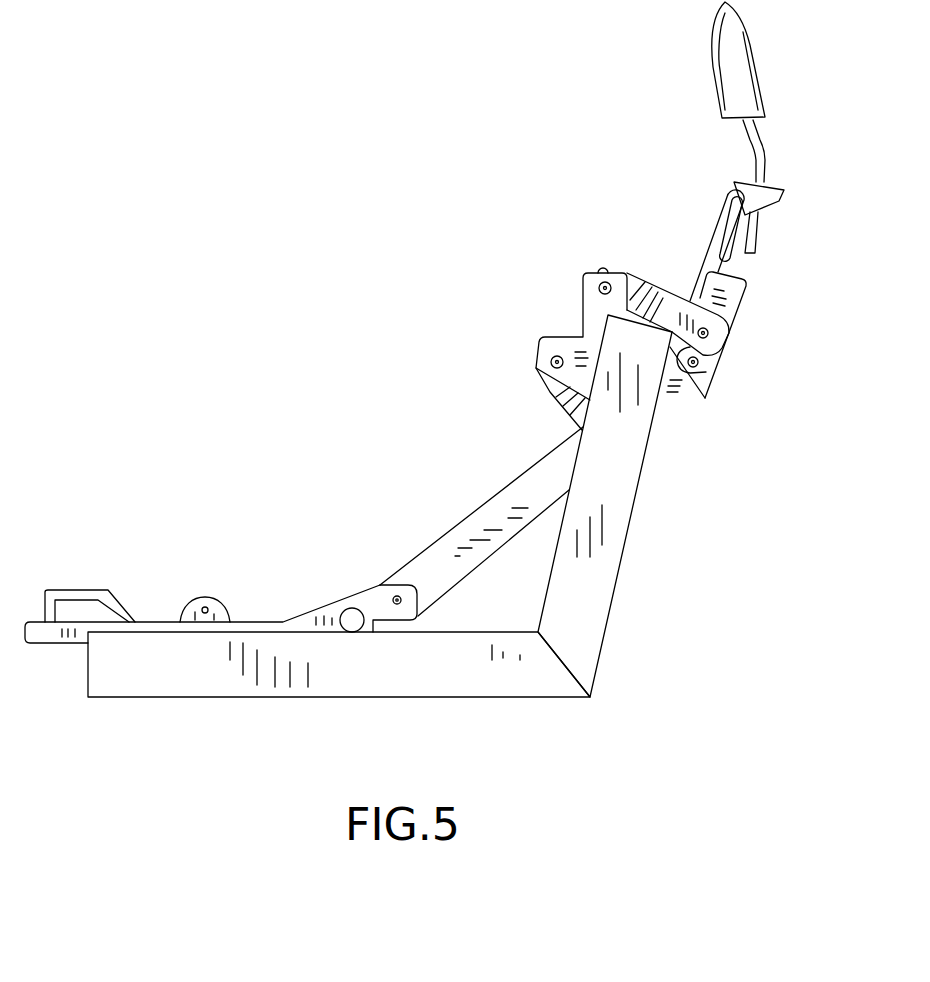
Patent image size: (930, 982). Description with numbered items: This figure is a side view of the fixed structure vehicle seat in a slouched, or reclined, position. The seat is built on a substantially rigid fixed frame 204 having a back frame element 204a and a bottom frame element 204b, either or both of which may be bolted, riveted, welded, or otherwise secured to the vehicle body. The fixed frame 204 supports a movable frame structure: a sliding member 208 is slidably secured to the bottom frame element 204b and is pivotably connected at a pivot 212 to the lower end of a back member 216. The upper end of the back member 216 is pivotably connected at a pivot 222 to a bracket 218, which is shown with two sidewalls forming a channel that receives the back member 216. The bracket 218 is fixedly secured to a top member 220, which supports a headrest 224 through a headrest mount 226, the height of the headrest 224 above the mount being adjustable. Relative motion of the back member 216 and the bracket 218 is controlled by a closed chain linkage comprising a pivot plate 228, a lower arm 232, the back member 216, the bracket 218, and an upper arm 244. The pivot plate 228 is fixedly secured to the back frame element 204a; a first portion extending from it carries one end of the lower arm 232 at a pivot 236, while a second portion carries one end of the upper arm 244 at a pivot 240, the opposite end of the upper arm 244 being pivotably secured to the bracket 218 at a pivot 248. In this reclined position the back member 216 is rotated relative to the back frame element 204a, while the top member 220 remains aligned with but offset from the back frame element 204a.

The fixed frame 204 is at (590, 698).
The back frame element 204a is at (592, 600).
The bottom frame element 204b is at (352, 686).
The sliding member 208 is at (325, 612).
The pivot 212 is at (397, 596).
The back member 216 is at (485, 520).
The bracket 218 is at (727, 302).
The top member 220 is at (722, 256).
The pivot 222 is at (700, 369).
The headrest 224 is at (743, 64).
The headrest mount 226 is at (768, 199).
The pivot plate 228 is at (590, 312).
The lower arm 232 is at (574, 398).
The pivot 236 is at (548, 358).
The pivot 240 is at (604, 284).
The upper arm 244 is at (664, 306).
The pivot 248 is at (710, 337).